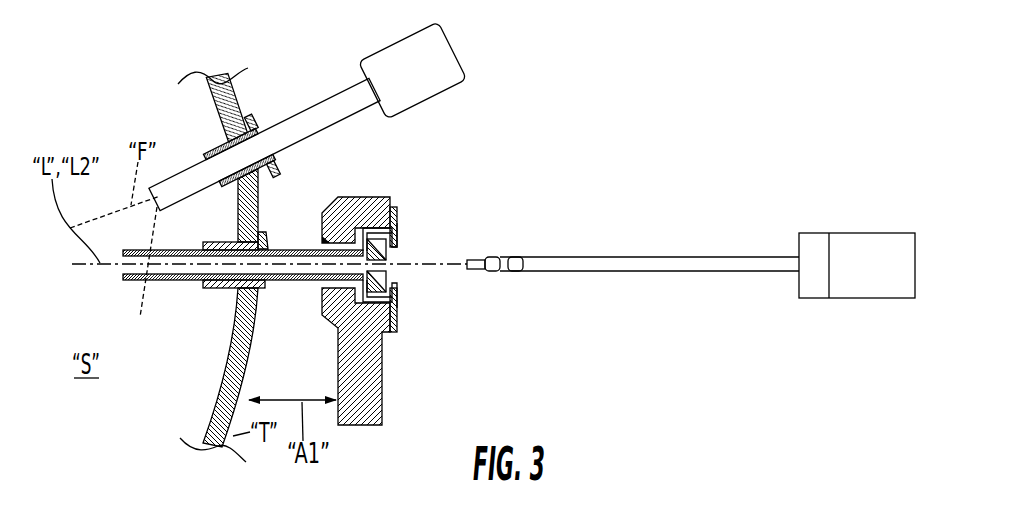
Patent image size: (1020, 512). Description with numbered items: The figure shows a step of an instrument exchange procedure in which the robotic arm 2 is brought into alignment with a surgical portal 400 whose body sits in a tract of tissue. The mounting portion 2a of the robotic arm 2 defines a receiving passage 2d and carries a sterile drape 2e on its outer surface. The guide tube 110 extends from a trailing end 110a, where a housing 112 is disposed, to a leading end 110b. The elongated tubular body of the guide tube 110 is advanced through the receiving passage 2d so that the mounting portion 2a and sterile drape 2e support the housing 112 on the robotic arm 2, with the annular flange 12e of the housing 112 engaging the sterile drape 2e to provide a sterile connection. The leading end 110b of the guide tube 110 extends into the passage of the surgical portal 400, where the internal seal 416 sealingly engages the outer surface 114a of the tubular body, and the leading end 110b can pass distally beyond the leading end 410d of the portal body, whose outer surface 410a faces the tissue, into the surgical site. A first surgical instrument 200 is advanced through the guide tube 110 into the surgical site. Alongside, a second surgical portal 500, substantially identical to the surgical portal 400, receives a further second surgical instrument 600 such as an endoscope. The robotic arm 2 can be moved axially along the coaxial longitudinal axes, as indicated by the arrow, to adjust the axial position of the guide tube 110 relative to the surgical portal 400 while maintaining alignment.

The robotic arm 2 is at (386, 388).
The mounting portion 2a is at (363, 198).
The receiving passage 2d is at (321, 245).
The sterile drape 2e is at (398, 206).
The annular flange 12e is at (397, 214).
The guide tube 110 is at (297, 281).
The trailing end 110a is at (397, 231).
The leading end 110b is at (130, 282).
The housing 112 is at (399, 302).
The outer surface 114a is at (128, 248).
The first surgical instrument 200 is at (667, 257).
The surgical portal 400 is at (217, 290).
The outer surface 410a is at (262, 240).
The leading end 410d is at (205, 243).
The internal seal 416 is at (235, 328).
The second surgical portal 500 is at (260, 128).
The further second surgical instrument 600 is at (456, 46).